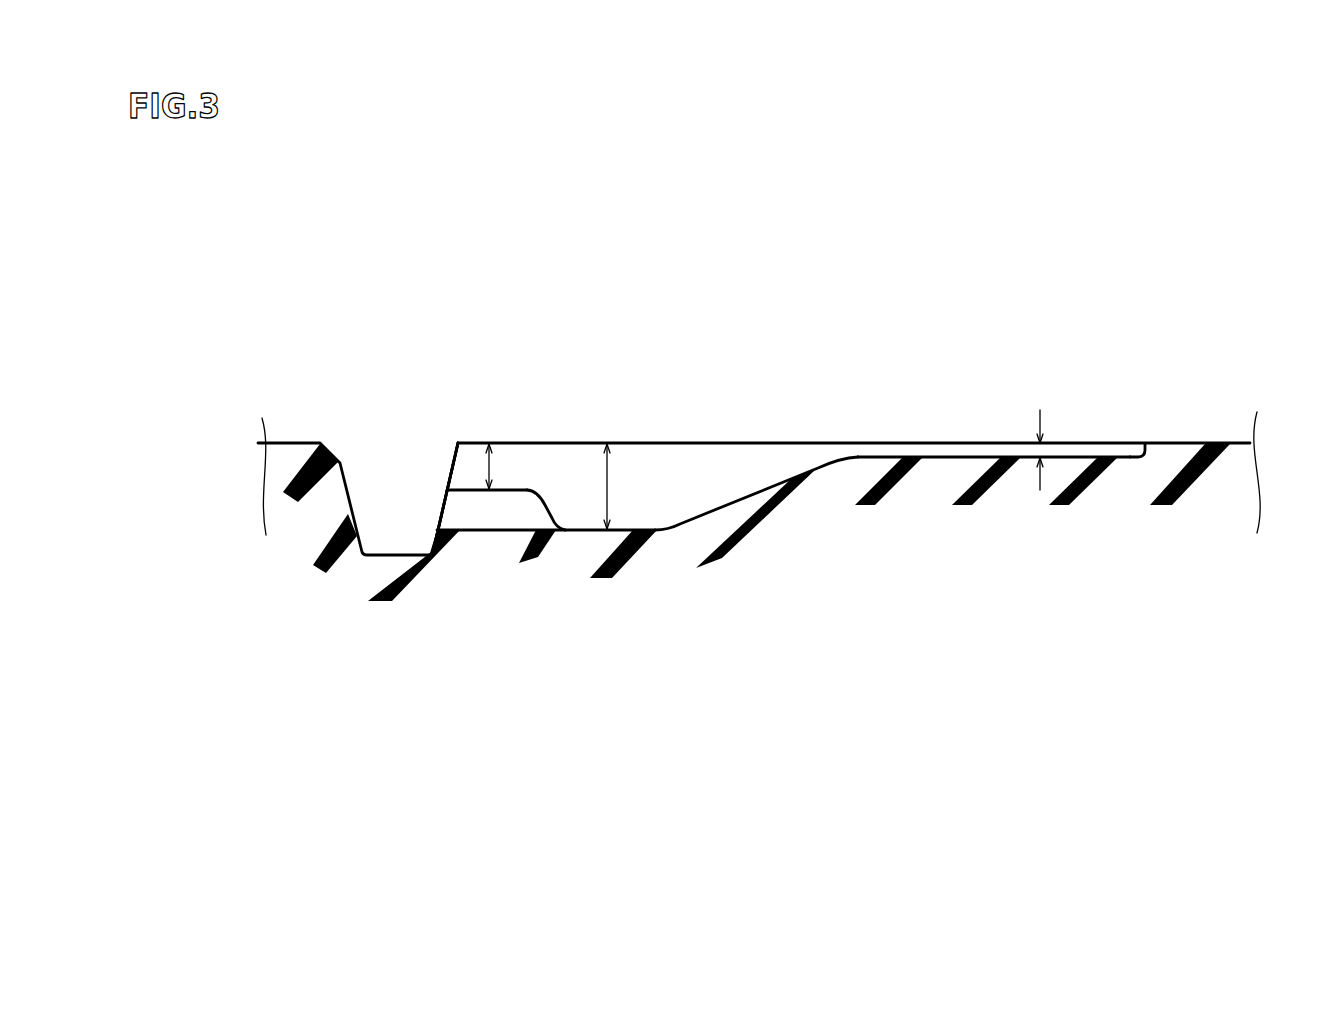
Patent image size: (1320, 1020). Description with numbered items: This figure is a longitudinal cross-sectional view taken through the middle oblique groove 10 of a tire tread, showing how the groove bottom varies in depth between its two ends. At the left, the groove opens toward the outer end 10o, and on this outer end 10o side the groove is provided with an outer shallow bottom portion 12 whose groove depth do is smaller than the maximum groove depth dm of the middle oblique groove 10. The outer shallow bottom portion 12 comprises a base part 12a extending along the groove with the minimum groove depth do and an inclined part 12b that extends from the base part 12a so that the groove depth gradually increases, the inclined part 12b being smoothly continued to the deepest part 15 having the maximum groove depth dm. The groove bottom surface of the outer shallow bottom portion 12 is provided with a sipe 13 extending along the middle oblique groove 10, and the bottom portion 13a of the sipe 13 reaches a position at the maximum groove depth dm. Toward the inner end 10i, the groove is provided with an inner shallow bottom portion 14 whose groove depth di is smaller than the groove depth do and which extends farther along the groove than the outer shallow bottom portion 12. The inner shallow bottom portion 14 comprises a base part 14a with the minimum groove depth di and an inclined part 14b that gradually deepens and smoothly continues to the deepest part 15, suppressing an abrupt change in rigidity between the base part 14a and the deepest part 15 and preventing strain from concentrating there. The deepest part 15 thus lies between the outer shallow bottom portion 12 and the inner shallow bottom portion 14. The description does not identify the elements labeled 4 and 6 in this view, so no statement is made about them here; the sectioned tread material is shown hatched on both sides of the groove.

The main groove 4 is at (378, 466).
The land portion 6 is at (863, 413).
The middle oblique groove 10 is at (814, 548).
The outer end 10o is at (448, 468).
The inner end 10i is at (1143, 447).
The outer shallow bottom portion 12 is at (511, 595).
The base part 12a is at (508, 490).
The inclined part 12b is at (553, 516).
The sipe 13 is at (453, 508).
The bottom portion of the sipe 13a is at (493, 530).
The inner shallow bottom portion 14 is at (892, 582).
The base part 14a is at (936, 458).
The inclined part 14b is at (768, 487).
The deepest part 15 is at (623, 530).
The groove depth of the outer shallow bottom portion do is at (493, 465).
The maximum groove depth dm is at (608, 485).
The groove depth of the inner shallow bottom portion di is at (1043, 447).